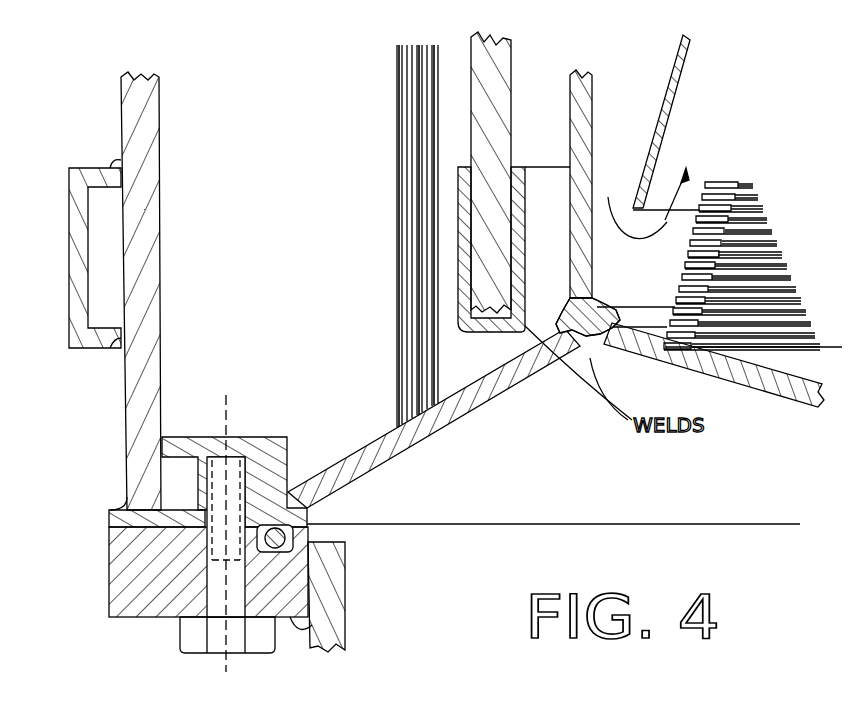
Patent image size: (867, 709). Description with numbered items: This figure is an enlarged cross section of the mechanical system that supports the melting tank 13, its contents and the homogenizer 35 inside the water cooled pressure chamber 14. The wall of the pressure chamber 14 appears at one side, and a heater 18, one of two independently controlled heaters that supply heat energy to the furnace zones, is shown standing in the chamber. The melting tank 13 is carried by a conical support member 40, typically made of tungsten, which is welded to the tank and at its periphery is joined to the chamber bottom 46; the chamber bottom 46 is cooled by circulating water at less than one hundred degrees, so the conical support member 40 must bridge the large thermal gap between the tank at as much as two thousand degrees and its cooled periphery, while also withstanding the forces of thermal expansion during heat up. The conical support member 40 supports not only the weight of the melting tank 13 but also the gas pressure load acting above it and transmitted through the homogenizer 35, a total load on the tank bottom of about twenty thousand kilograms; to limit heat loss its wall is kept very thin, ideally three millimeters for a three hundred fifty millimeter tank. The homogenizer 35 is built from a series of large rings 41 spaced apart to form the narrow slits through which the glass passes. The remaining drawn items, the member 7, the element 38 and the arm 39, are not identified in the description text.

The bracket 7 is at (108, 348).
The melting tank 13 is at (592, 78).
The pressure chamber 14 is at (159, 132).
The heater 18 is at (511, 58).
The homogenizer 35 is at (677, 95).
The strands 38 is at (397, 72).
The arm 39 is at (727, 381).
The conical support member 40 is at (500, 393).
The large rings 41 is at (718, 182).
The chamber bottom 46 is at (270, 437).